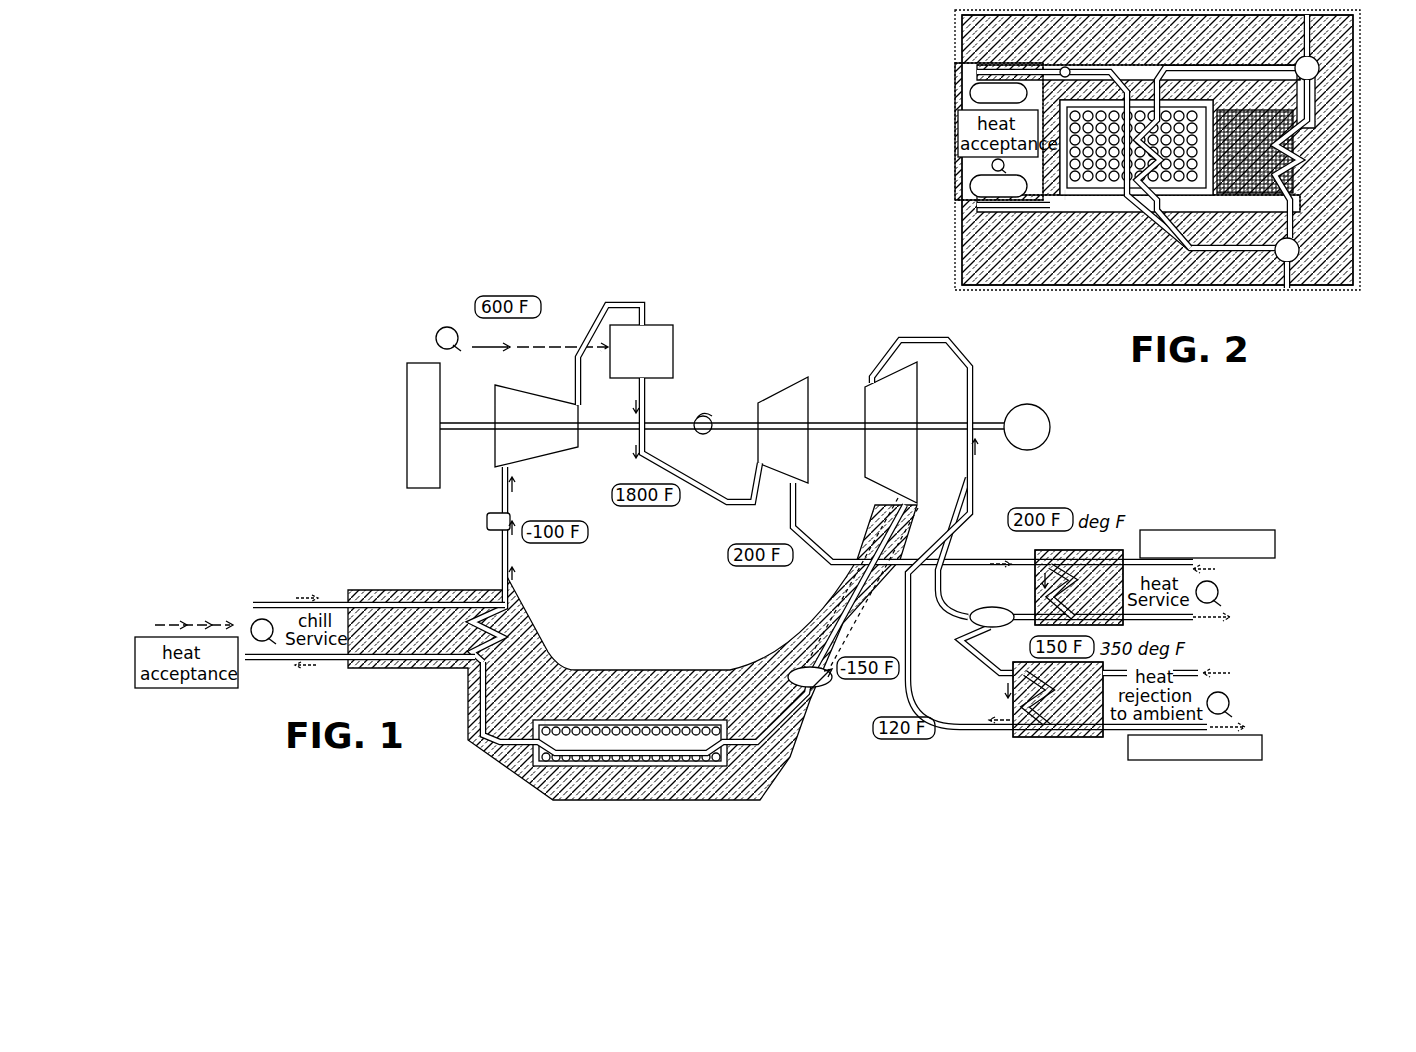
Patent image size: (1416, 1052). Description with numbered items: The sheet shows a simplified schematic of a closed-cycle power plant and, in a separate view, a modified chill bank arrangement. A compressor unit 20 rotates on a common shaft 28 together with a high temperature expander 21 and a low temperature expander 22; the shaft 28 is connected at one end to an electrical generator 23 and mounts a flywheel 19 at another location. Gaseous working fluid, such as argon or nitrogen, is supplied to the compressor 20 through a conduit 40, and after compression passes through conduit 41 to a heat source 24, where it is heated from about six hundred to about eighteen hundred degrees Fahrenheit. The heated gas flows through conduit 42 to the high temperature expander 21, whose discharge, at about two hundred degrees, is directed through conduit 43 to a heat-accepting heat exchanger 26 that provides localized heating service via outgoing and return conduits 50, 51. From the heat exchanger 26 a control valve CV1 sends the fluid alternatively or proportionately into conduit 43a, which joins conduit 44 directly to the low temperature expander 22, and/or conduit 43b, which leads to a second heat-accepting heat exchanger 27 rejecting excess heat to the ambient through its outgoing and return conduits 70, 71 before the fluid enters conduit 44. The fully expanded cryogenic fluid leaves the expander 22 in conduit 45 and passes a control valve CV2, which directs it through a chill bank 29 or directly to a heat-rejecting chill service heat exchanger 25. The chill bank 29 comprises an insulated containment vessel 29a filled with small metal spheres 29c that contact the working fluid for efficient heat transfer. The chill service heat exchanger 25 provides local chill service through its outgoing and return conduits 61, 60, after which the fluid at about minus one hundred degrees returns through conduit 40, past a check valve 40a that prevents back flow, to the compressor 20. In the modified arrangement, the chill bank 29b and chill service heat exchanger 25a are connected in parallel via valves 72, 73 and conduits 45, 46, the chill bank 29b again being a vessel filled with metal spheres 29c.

In FIG. 1, the flywheel 19 is at (436, 397).
In FIG. 1, the compressor unit 20 is at (528, 415).
In FIG. 1, the high temperature expander 21 is at (802, 418).
In FIG. 1, the low temperature expander 22 is at (906, 413).
In FIG. 1, the electrical generator 23 is at (1040, 438).
In FIG. 1, the heat source 24 is at (656, 361).
In FIG. 1, the chill service heat exchanger 25 is at (462, 643).
In FIG. 2, the chill service heat exchanger 25a is at (1300, 150).
In FIG. 1, the heat-accepting heat exchanger 26 is at (1112, 600).
In FIG. 1, the second heat-accepting heat exchanger 27 is at (1085, 707).
In FIG. 1, the common shaft 28 is at (710, 415).
In FIG. 1, the chill bank 29 is at (688, 754).
In FIG. 1, the containment vessel 29a is at (540, 765).
In FIG. 2, the chill bank 29b is at (1175, 190).
In FIG. 1, the metal spheres 29c is at (545, 720).
In FIG. 2, the metal spheres 29c is at (1075, 185).
In FIG. 1, the conduit 40 is at (500, 482).
In FIG. 2, the conduit 40 is at (1315, 40).
In FIG. 1, the check valve 40a is at (487, 522).
In FIG. 1, the conduit 41 is at (590, 333).
In FIG. 1, the conduit 42 is at (650, 398).
In FIG. 1, the conduit 43 is at (790, 526).
In FIG. 1, the conduit 43a is at (968, 612).
In FIG. 1, the conduit 43b is at (965, 648).
In FIG. 1, the conduit 44 is at (893, 338).
In FIG. 1, the conduit 45 is at (870, 545).
In FIG. 2, the conduit 45 is at (1290, 225).
In FIG. 2, the conduit 46 is at (1240, 253).
In FIG. 1, the outgoing conduit 50 is at (1187, 620).
In FIG. 1, the return conduit 51 is at (1133, 550).
In FIG. 1, the return conduit 60 is at (262, 600).
In FIG. 2, the return conduit 60 is at (1015, 96).
In FIG. 1, the outgoing conduit 61 is at (262, 663).
In FIG. 2, the outgoing conduit 61 is at (1020, 186).
In FIG. 1, the outgoing conduit 70 is at (1112, 737).
In FIG. 1, the return conduit 71 is at (1183, 668).
In FIG. 2, the valve 72 is at (1300, 252).
In FIG. 2, the valve 73 is at (1318, 72).
In FIG. 1, the control valve CV1 is at (992, 617).
In FIG. 1, the control valve CV2 is at (810, 677).